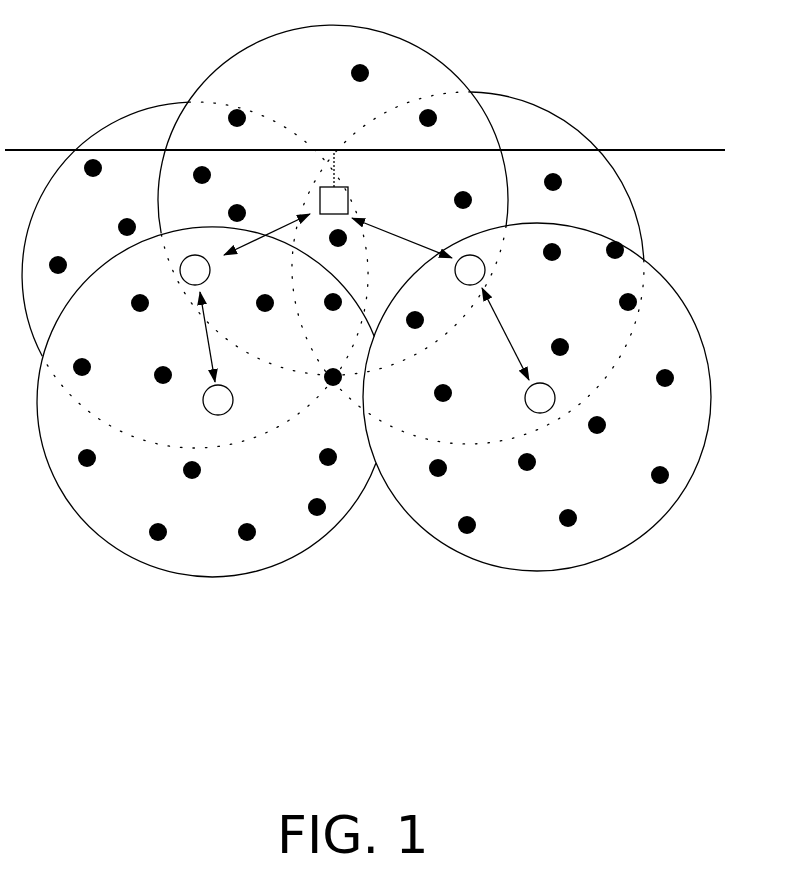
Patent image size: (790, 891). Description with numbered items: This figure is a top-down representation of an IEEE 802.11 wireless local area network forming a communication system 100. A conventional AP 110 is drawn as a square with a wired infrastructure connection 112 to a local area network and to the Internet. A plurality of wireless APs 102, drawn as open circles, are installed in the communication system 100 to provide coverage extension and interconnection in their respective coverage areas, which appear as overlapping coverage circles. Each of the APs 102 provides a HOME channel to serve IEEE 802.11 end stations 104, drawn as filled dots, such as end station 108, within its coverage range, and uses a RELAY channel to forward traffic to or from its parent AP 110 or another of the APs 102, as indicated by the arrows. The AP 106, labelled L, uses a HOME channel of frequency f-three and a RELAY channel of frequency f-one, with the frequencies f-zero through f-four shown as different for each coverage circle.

The communication system 100 is at (662, 654).
The wireless access points 102 is at (666, 242).
The end stations 104 is at (176, 541).
The access point L 106 is at (229, 412).
The end station 108 is at (149, 531).
The conventional access point 110 is at (349, 194).
The wired infrastructure connection 112 is at (630, 151).